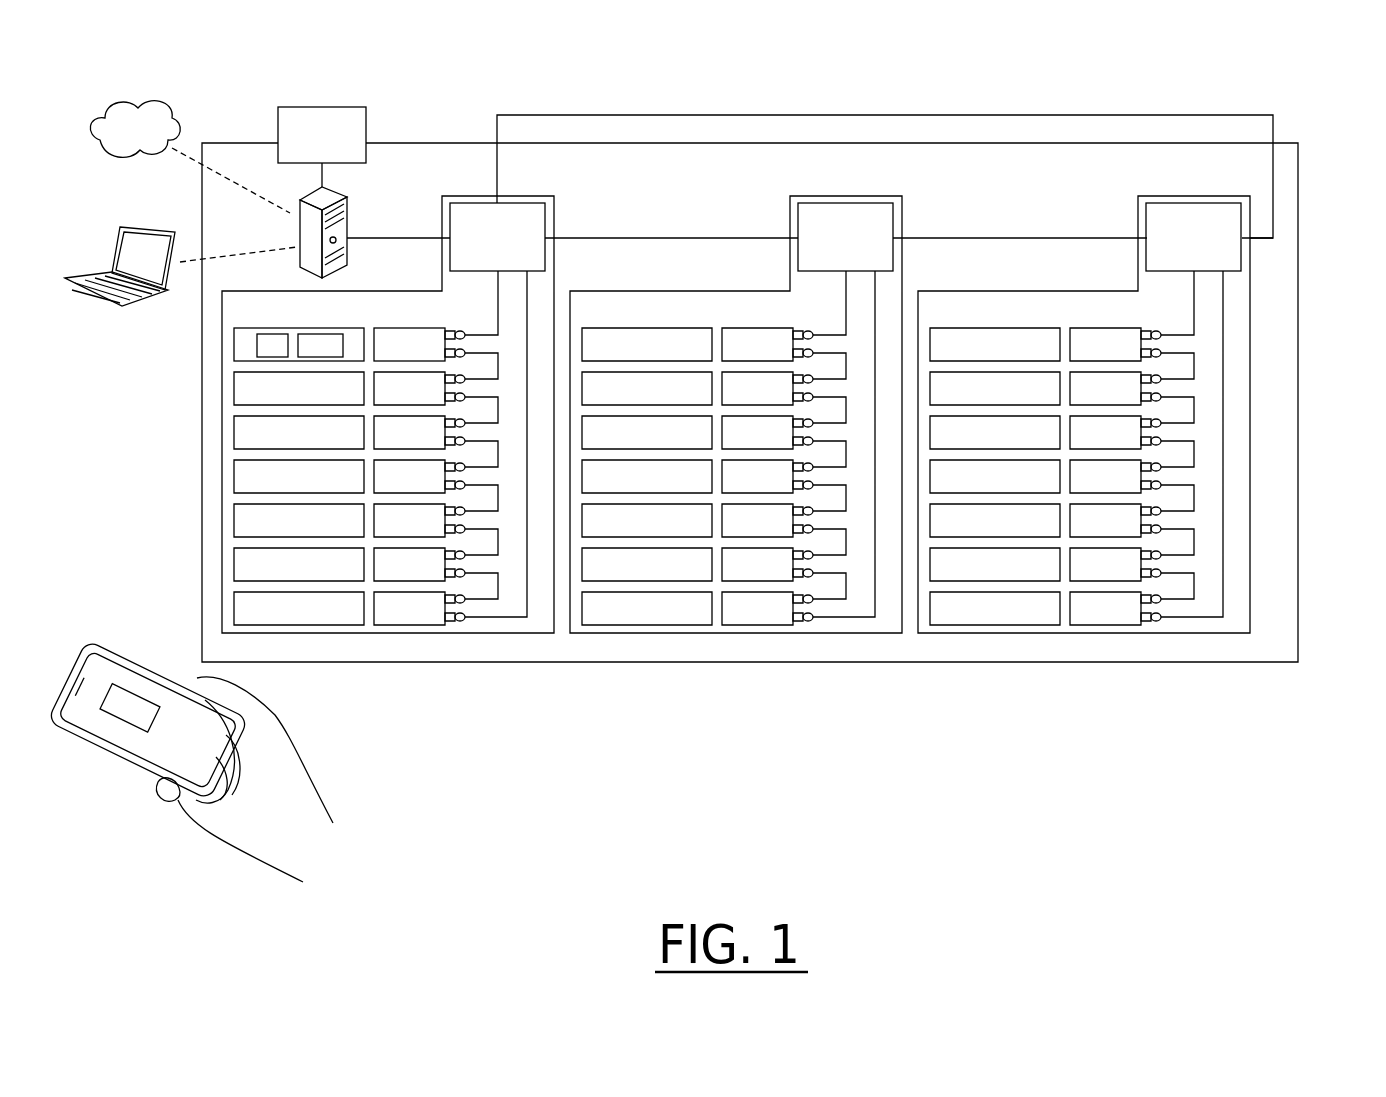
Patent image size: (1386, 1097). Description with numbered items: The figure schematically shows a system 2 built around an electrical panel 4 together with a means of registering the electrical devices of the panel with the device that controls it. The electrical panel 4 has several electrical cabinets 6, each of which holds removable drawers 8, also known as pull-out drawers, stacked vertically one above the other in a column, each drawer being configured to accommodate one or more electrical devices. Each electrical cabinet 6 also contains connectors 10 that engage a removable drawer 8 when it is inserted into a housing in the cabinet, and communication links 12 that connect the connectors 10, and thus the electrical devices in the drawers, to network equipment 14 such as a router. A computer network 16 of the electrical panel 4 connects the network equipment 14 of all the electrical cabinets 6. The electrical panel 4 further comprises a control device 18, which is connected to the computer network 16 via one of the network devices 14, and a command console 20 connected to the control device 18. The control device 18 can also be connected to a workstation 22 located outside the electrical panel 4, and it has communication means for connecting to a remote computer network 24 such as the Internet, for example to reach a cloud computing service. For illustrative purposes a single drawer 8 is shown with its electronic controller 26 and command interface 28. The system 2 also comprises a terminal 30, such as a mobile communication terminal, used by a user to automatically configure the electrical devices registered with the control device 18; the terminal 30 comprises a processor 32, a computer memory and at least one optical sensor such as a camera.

The system 2 is at (1094, 92).
The electrical panel 4 is at (1304, 240).
The electrical cabinet 6 is at (396, 650).
The removable drawer 8 is at (236, 342).
The connector 10 is at (403, 340).
The communication link 12 is at (530, 600).
The network equipment 14 is at (530, 226).
The computer network 16 is at (993, 237).
The control device 18 is at (348, 216).
The command console 20 is at (347, 127).
The workstation 22 is at (125, 247).
The remote computer network 24 is at (112, 116).
The electronic controller 26 is at (316, 345).
The command interface 28 is at (277, 350).
The terminal 30 is at (188, 723).
The processor 32 is at (133, 686).